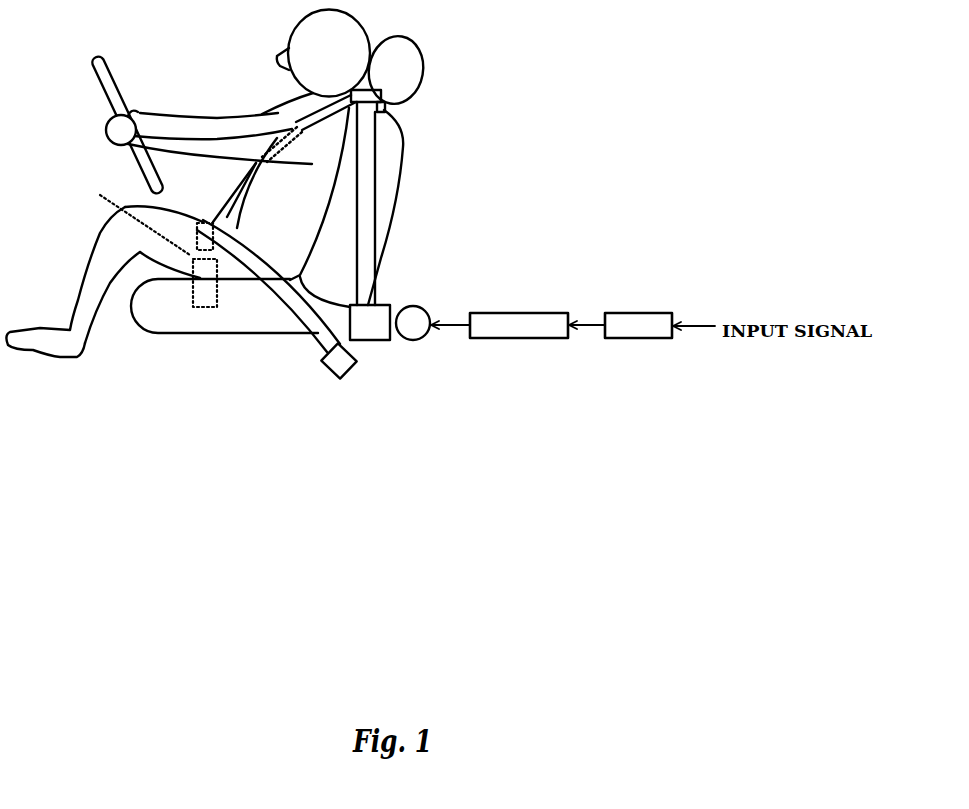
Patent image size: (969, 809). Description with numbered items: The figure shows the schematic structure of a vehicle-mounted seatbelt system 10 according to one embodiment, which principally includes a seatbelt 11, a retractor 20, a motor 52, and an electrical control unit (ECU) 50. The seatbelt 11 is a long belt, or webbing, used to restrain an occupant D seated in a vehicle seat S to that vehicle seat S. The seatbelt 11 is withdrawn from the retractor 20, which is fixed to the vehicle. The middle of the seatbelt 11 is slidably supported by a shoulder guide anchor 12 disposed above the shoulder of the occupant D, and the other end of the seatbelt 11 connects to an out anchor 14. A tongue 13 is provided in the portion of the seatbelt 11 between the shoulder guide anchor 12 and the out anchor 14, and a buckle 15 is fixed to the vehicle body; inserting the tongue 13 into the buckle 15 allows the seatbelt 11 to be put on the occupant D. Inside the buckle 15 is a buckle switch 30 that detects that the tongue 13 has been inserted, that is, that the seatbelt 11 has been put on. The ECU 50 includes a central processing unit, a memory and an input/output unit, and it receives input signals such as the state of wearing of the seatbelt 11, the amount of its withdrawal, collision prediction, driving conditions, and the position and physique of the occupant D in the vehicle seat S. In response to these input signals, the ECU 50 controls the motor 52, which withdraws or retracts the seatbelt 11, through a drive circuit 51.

The seatbelt system 10 is at (565, 137).
The seatbelt 11 is at (378, 259).
The shoulder guide anchor 12 is at (383, 93).
The tongue 13 is at (121, 221).
The out anchor 14 is at (333, 360).
The buckle 15 is at (216, 300).
The retractor 20 is at (377, 343).
The buckle switch 30 is at (193, 290).
The electrical control unit (ECU) 50 is at (637, 313).
The drive circuit 51 is at (520, 313).
The motor 52 is at (434, 308).
The occupant D is at (262, 112).
The vehicle seat S is at (401, 155).